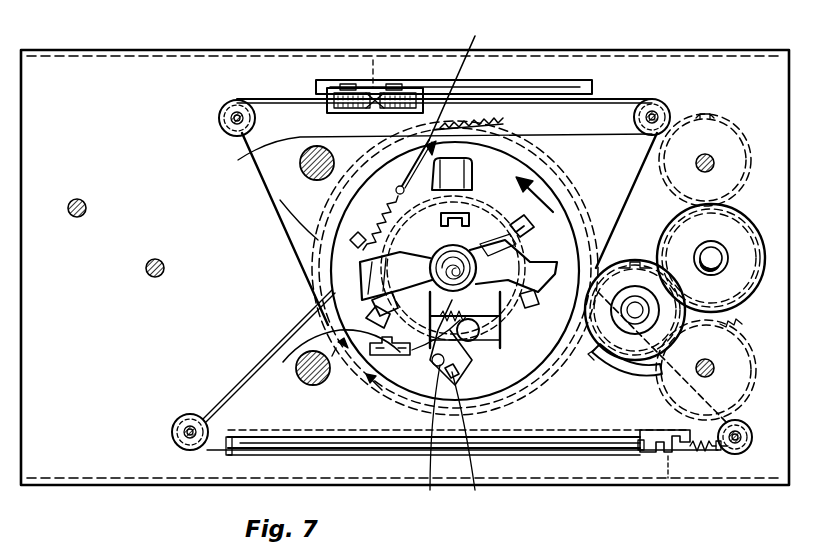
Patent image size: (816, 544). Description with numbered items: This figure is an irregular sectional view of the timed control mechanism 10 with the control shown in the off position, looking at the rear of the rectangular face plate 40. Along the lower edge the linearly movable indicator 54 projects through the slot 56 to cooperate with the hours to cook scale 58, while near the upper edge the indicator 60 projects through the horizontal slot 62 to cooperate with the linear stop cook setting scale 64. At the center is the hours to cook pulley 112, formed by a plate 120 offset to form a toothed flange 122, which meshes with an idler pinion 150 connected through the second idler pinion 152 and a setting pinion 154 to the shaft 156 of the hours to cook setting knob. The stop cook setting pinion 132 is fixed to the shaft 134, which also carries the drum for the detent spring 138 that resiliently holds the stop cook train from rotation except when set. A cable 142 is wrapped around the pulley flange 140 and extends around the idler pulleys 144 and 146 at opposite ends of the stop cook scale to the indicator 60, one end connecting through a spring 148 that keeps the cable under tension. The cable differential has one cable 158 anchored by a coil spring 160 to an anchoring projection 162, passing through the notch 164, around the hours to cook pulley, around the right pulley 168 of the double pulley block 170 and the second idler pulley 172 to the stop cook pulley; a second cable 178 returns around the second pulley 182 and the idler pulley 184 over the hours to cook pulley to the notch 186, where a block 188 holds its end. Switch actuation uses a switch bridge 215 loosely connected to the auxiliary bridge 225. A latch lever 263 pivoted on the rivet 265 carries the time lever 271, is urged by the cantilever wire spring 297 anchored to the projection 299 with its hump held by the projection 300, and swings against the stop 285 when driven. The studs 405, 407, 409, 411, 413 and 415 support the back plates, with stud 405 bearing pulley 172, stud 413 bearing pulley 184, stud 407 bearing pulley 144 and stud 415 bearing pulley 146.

The direction arrow 10 is at (444, 280).
The face plate 40 is at (62, 58).
The linearly movable indicator 54 is at (372, 68).
The slot 56 is at (440, 80).
The hours to cook scale 58 is at (552, 86).
The indicator 60 is at (681, 462).
The horizontal slot 62 is at (615, 456).
The linear stop cook setting scale 64 is at (578, 449).
The hours to cook pulley 112 is at (570, 190).
The plate 120 is at (552, 175).
The toothed flange 122 is at (505, 128).
The stop cook setting pinion 132 is at (738, 348).
The shaft 134 is at (698, 373).
The detent spring 138 is at (640, 375).
The pulley flange 140 is at (554, 180).
The cable 142 is at (234, 353).
The idler pulley 144 is at (172, 432).
The idler pulley 146 is at (748, 441).
The spring 148 is at (700, 456).
The idler pinion 150 is at (636, 264).
The second idler pinion 152 is at (745, 226).
The setting pinion 154 is at (733, 128).
The shaft 156 is at (716, 160).
The cable 158 is at (262, 190).
The coil spring 160 is at (350, 240).
The anchoring projection 162 is at (355, 268).
The notch 164 is at (448, 102).
The right pulley 168 is at (326, 92).
The double pulley block 170 is at (364, 88).
The second idler pulley 172 is at (222, 118).
The second cable 178 is at (622, 100).
The second pulley 182 is at (395, 95).
The idler pulley 184 is at (663, 105).
The notch 186 is at (447, 436).
The block 188 is at (479, 441).
The switch bridge 215 is at (352, 300).
The auxiliary bridge 225 is at (447, 254).
The latch lever 263 is at (500, 333).
The rivet 265 is at (503, 309).
The time lever 271 is at (388, 392).
The stop 285 is at (510, 281).
The cantilever wire spring 297 is at (430, 305).
The projection 299 is at (294, 352).
The projection 300 is at (400, 352).
The stud 405 is at (236, 117).
The stud 407 is at (197, 430).
The stud 409 is at (280, 200).
The stud 411 is at (312, 378).
The stud 413 is at (655, 113).
The stud 415 is at (737, 445).